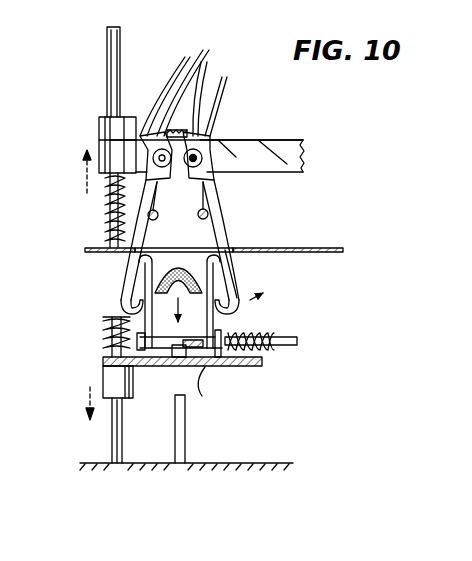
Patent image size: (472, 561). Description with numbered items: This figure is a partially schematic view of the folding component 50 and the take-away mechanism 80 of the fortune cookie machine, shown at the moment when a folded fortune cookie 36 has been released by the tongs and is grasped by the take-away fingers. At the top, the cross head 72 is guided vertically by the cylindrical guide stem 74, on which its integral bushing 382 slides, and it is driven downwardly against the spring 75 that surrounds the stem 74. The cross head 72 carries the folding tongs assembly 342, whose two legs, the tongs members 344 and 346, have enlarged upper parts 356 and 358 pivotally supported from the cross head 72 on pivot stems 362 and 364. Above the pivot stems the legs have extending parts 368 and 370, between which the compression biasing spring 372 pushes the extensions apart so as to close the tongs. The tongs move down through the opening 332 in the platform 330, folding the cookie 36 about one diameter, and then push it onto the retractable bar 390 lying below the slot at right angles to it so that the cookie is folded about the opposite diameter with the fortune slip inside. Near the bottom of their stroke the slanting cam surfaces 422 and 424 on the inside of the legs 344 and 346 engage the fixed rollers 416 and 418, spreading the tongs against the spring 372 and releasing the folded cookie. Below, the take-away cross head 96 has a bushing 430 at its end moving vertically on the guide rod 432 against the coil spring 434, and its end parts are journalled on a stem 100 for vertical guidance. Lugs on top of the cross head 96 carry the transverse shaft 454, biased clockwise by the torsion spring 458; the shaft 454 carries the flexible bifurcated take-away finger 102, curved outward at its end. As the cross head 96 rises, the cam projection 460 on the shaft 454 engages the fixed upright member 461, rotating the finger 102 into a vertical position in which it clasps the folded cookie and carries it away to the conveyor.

The guide stem 74 is at (107, 78).
The bushing 382 is at (99, 132).
The spring 75 is at (107, 192).
The tongs member 344 is at (105, 222).
The slanting cam surface 422 is at (107, 238).
The opening 332 is at (238, 247).
The platform 330 is at (343, 246).
The cross head 72 is at (235, 131).
The slanting cam surface 424 is at (301, 158).
The enlarged upper part 358 is at (252, 153).
The folding tongs assembly 342 is at (220, 144).
The folding component 50 is at (328, 147).
The enlarged upper part 356 is at (163, 128).
The pivot stem 364 is at (205, 132).
The pivot stem 362 is at (165, 96).
The extending part 368 is at (183, 83).
The compression biasing spring 372 is at (216, 88).
The extending part 370 is at (234, 97).
The roller 416 is at (164, 240).
The bar 390 is at (135, 271).
The tongs member 346 is at (204, 192).
The roller 418 is at (215, 212).
The fortune cookie 36 is at (229, 235).
The take-away mechanism 80 is at (299, 322).
The take-away finger 102 is at (212, 289).
The transverse shaft 454 is at (297, 343).
The torsion spring 458 is at (268, 333).
The coil spring 434 is at (107, 337).
The cross head 96 is at (228, 368).
The cam projection 460 is at (218, 391).
The bushing 430 is at (113, 376).
The stem 100 is at (120, 425).
The upright member 461 is at (185, 440).
The guide rod 432 is at (118, 465).